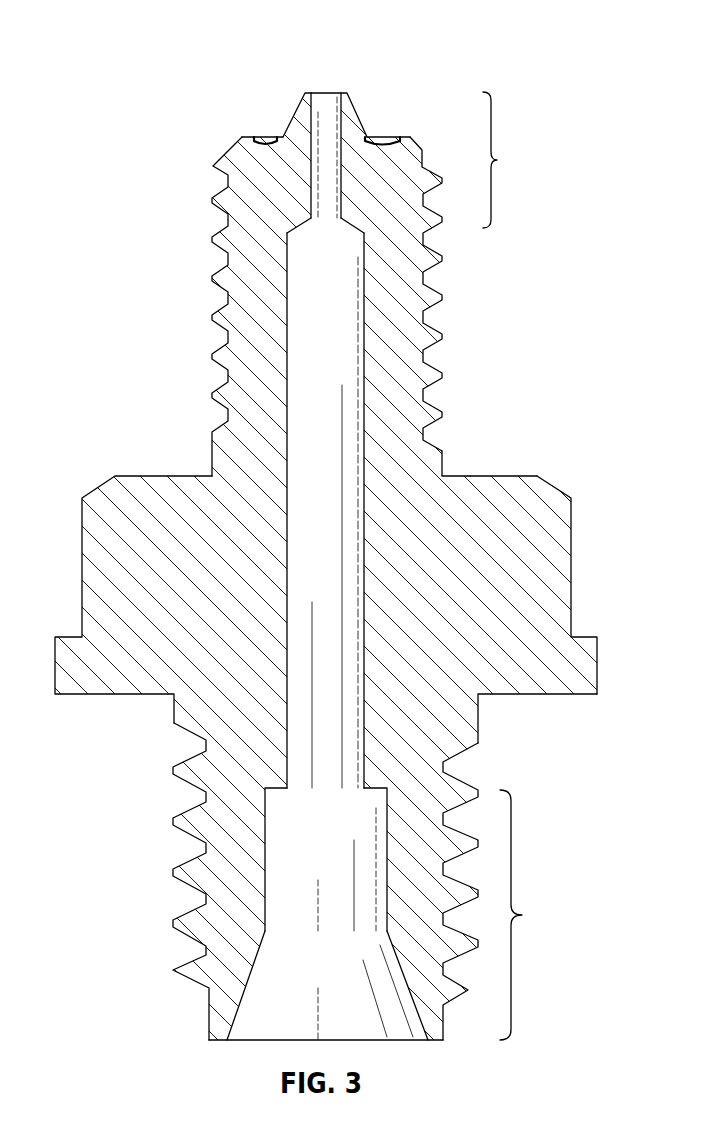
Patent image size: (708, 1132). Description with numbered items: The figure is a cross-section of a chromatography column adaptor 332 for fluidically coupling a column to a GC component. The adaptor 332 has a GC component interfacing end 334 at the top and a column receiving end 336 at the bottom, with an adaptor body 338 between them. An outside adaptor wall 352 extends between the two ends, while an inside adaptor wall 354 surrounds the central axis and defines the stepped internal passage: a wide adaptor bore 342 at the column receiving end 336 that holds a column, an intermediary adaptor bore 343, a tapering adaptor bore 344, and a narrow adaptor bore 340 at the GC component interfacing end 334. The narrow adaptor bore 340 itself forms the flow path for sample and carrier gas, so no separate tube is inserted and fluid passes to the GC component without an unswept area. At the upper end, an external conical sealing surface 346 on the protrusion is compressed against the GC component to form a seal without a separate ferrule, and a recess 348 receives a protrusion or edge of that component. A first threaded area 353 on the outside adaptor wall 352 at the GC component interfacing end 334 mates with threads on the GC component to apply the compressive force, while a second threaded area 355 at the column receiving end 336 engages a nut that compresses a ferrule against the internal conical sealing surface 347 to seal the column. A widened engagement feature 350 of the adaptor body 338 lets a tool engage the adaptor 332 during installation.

The chromatography column adaptor 332 is at (133, 75).
The GC component interfacing end 334 is at (477, 271).
The column receiving end 336 is at (511, 891).
The adaptor body 338 is at (423, 537).
The narrow adaptor bore 340 is at (323, 125).
The wide adaptor bore 342 is at (300, 883).
The intermediary adaptor bore 343 is at (303, 611).
The tapering adaptor bore 344 is at (325, 222).
The external conical sealing surface 346 is at (305, 113).
The internal conical sealing surface 347 is at (230, 1018).
The recess 348 is at (387, 137).
The engagement feature 350 is at (574, 560).
The outside adaptor wall 352 is at (442, 463).
The first threaded area 353 is at (216, 283).
The inside adaptor wall 354 is at (365, 398).
The second threaded area 355 is at (192, 785).